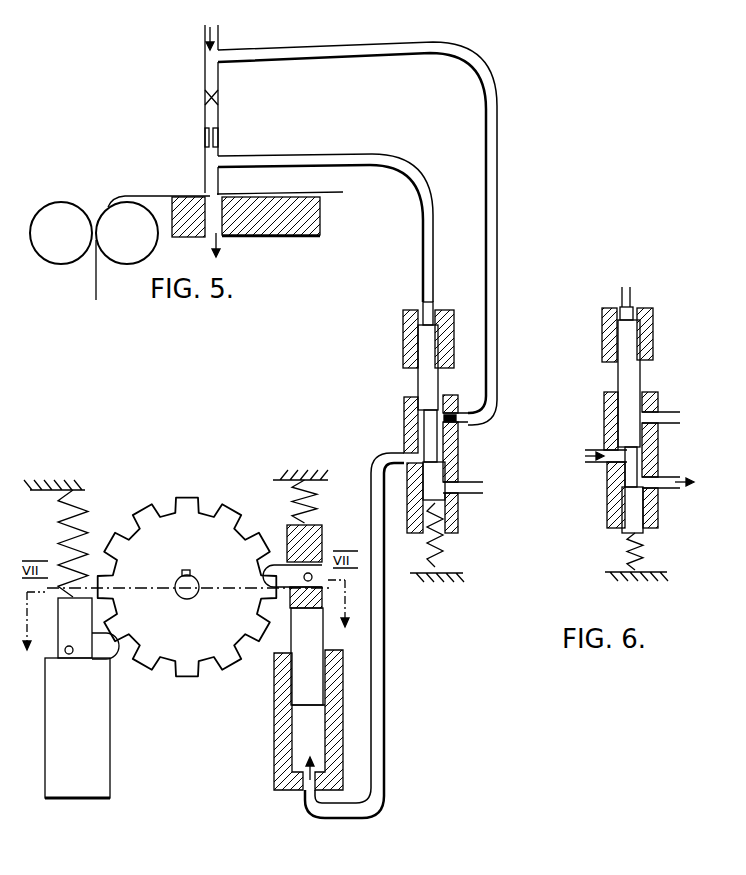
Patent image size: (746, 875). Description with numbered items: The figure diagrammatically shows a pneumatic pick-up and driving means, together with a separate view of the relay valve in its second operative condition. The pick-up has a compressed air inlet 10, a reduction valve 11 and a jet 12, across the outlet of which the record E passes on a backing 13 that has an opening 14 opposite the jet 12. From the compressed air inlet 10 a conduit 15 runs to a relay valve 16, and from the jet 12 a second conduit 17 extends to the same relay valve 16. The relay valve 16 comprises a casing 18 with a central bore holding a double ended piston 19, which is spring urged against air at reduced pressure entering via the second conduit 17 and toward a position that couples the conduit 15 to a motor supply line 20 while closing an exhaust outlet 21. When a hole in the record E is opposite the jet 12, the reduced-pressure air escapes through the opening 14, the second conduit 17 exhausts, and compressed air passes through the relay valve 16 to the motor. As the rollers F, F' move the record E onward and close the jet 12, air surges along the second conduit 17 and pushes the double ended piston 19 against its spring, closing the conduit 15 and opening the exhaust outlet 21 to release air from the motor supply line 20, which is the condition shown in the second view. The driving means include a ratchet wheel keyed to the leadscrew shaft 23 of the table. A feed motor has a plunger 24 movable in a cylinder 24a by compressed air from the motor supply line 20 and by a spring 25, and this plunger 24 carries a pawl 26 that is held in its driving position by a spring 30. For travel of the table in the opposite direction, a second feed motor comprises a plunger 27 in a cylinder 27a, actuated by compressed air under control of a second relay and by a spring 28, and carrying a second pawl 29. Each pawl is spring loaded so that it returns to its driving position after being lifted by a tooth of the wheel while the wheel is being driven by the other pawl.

In FIG. 5, the compressed air inlet 10 is at (205, 47).
In FIG. 5, the reduction valve 11 is at (220, 97).
In FIG. 5, the jet 12 is at (213, 183).
In FIG. 5, the backing 13 is at (298, 212).
In FIG. 5, the opening 14 is at (212, 227).
In FIG. 5, the conduit 15 is at (360, 48).
In FIG. 6, the conduit 15 is at (662, 417).
In FIG. 5, the relay valve 16 is at (441, 302).
In FIG. 6, the relay valve 16 is at (602, 328).
In FIG. 5, the second conduit 17 is at (405, 168).
In FIG. 5, the casing 18 is at (413, 332).
In FIG. 6, the casing 18 is at (647, 333).
In FIG. 5, the double ended piston 19 is at (428, 377).
In FIG. 6, the double ended piston 19 is at (630, 382).
In FIG. 5, the motor supply line 20 is at (377, 642).
In FIG. 6, the motor supply line 20 is at (598, 462).
In FIG. 5, the exhaust outlet 21 is at (473, 488).
In FIG. 6, the exhaust outlet 21 is at (667, 485).
In FIG. 5, the leadscrew shaft 23 is at (190, 582).
In FIG. 5, the plunger 24 is at (307, 655).
In FIG. 5, the cylinder 24a is at (283, 745).
In FIG. 5, the spring 25 is at (292, 498).
In FIG. 5, the pawl 26 is at (267, 590).
In FIG. 5, the plunger 27 is at (67, 641).
In FIG. 5, the cylinder 27a is at (92, 733).
In FIG. 5, the spring 28 is at (83, 517).
In FIG. 5, the second pawl 29 is at (112, 660).
In FIG. 5, the spring 30 is at (292, 550).
In FIG. 5, the record E is at (155, 195).
In FIG. 5, the roller F is at (127, 251).
In FIG. 5, the roller F' is at (61, 248).